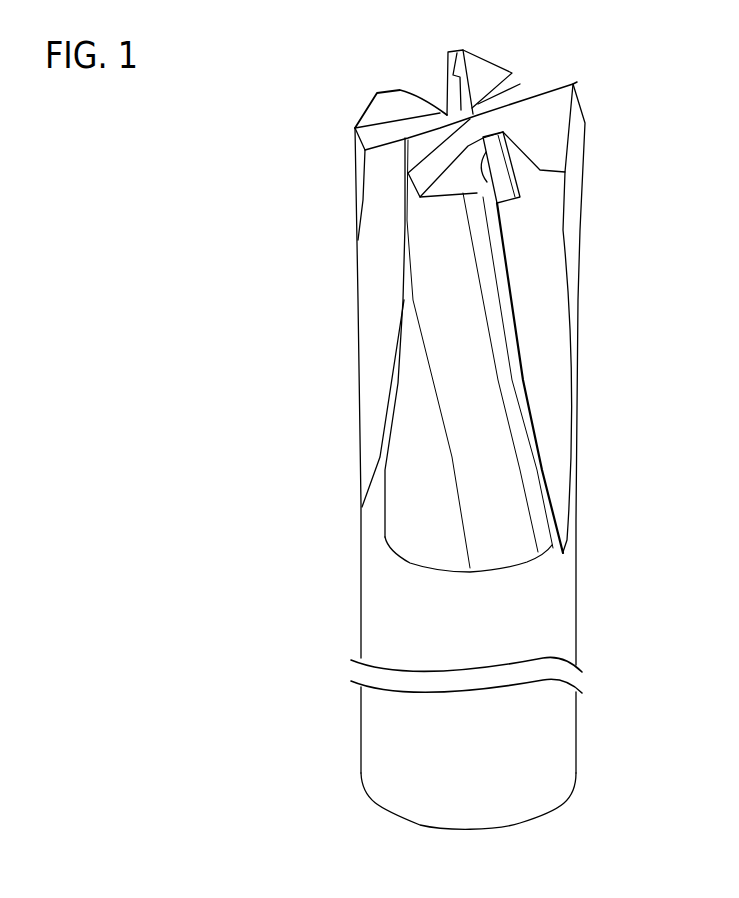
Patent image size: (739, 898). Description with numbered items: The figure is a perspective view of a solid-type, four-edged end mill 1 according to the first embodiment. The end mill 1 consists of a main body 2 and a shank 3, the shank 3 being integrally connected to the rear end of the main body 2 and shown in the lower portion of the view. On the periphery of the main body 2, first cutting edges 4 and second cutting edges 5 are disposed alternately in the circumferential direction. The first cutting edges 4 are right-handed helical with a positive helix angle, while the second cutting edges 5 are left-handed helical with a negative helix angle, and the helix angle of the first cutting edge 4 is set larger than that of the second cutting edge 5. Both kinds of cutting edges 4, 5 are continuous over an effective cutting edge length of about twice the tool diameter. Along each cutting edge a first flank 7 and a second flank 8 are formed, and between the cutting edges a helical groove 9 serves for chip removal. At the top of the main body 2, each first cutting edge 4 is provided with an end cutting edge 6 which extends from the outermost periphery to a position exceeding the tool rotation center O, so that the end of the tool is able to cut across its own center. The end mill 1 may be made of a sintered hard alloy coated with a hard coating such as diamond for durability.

The end mill 1 is at (577, 544).
The main body 2 is at (407, 493).
The shank 3 is at (512, 728).
The first cutting edge 4 is at (357, 258).
The second cutting edge 5 is at (448, 73).
The end cutting edge 6 is at (461, 52).
The first flank 7 is at (522, 373).
The second flank 8 is at (530, 482).
The helical groove 9 is at (383, 198).
The tool rotation center O is at (518, 94).